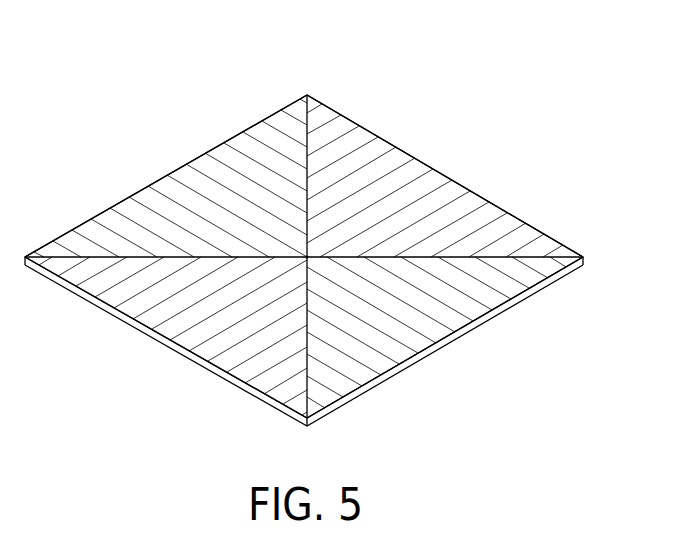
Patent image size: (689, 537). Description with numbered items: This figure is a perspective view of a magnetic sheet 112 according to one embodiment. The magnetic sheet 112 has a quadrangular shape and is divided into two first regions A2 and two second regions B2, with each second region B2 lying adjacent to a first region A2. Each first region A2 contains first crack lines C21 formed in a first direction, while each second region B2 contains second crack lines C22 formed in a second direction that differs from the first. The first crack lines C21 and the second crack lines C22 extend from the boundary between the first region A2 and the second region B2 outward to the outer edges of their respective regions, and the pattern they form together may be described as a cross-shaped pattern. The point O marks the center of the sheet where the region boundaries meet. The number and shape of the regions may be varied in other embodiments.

The magnetic sheet 112 is at (331, 38).
The first region A2 is at (176, 166).
The second region B2 is at (438, 167).
The center point O is at (309, 256).
The first crack lines C21 is at (112, 229).
The second crack lines C22 is at (527, 244).